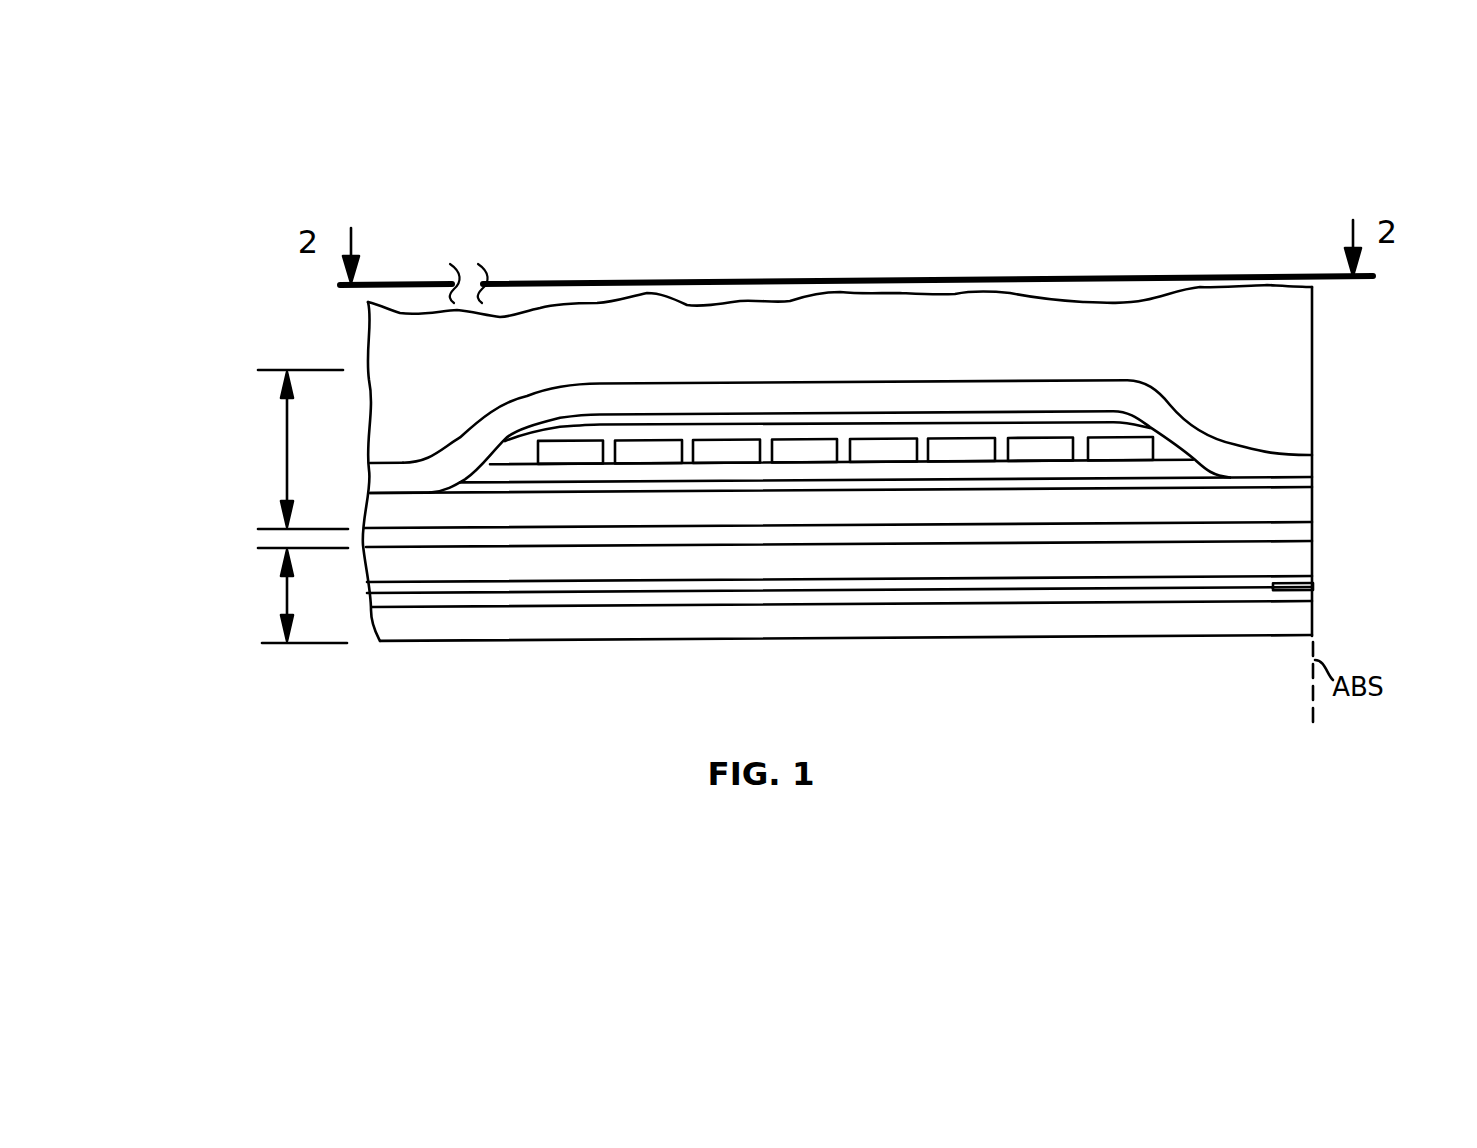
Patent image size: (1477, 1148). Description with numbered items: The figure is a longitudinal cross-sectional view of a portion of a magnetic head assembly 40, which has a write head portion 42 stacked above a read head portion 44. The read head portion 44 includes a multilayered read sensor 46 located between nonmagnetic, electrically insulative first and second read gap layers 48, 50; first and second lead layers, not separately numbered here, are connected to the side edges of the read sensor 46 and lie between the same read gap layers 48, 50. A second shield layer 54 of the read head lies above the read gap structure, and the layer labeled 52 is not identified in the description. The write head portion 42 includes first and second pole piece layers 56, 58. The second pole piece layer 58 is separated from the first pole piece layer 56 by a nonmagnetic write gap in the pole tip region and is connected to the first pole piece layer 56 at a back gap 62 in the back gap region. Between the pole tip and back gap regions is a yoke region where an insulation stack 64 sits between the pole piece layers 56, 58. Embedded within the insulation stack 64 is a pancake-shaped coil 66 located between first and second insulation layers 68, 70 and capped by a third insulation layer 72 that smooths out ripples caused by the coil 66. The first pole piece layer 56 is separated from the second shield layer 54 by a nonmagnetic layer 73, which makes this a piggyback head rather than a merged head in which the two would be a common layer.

The magnetic head assembly 40 is at (1352, 329).
The write head portion 42 is at (285, 450).
The read head portion 44 is at (285, 594).
The read sensor 46 is at (1252, 480).
The first read gap layer 48 is at (850, 602).
The second read gap layer 50 is at (773, 579).
The first shield layer S1 52 is at (987, 617).
The second shield layer 54 is at (1033, 557).
The first pole piece layer 56 is at (1168, 508).
The second pole piece layer 58 is at (712, 402).
The back gap 62 is at (397, 493).
The insulation stack 64 is at (1038, 390).
The coil 66 is at (808, 453).
The first insulation layer 68 is at (667, 477).
The second insulation layer 70 is at (647, 433).
The third insulation layer 72 is at (592, 417).
The nonmagnetic layer 73 is at (1098, 535).